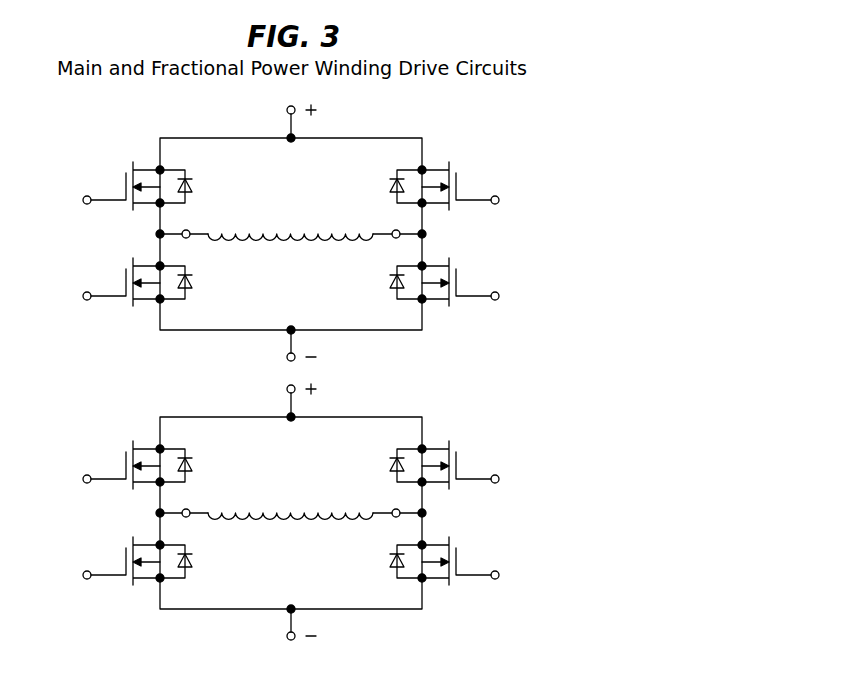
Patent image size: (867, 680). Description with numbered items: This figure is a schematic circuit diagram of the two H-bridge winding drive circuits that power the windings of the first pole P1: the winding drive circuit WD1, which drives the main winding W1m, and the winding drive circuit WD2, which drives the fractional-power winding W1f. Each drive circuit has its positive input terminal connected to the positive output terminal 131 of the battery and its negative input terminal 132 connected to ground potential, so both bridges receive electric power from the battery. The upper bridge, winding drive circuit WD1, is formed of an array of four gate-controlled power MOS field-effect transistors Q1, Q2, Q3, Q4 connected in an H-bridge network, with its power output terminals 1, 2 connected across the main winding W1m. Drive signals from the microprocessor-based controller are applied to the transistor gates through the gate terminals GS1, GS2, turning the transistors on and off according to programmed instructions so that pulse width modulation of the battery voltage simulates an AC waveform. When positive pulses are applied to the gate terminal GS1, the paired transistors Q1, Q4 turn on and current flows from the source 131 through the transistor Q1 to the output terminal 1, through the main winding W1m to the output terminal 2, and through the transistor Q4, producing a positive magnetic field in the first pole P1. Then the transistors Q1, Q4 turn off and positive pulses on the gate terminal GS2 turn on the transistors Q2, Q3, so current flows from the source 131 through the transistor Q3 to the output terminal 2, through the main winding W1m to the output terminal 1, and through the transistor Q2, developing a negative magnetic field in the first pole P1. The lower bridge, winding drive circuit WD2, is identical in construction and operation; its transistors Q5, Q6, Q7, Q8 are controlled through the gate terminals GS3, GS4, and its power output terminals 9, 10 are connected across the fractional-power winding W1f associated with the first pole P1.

The positive output terminal 131 is at (284, 260).
The negative input terminal 132 is at (284, 486).
The power output terminal 1 is at (182, 223).
The power output terminal 2 is at (399, 223).
The power output terminal 9 is at (182, 502).
The power output terminal 10 is at (399, 502).
The winding drive circuit WD1 is at (341, 137).
The winding drive circuit WD2 is at (290, 493).
The gate-controlled power MOS field-effect transistor Q1 is at (137, 179).
The gate-controlled power MOS field-effect transistor Q2 is at (137, 274).
The gate-controlled power MOS field-effect transistor Q3 is at (444, 177).
The gate-controlled power MOS field-effect transistor Q4 is at (444, 272).
The gate-controlled power MOS field-effect transistor Q5 is at (137, 458).
The gate-controlled power MOS field-effect transistor Q6 is at (137, 553).
The gate-controlled power MOS field-effect transistor Q7 is at (444, 456).
The gate-controlled power MOS field-effect transistor Q8 is at (444, 551).
The gate terminal GS1 is at (290, 249).
The gate terminal GS2 is at (290, 249).
The gate terminal GS3 is at (290, 528).
The gate terminal GS4 is at (290, 528).
The first pole P1 is at (290, 332).
The main winding W1m is at (290, 222).
The fractional-power winding W1f is at (290, 501).